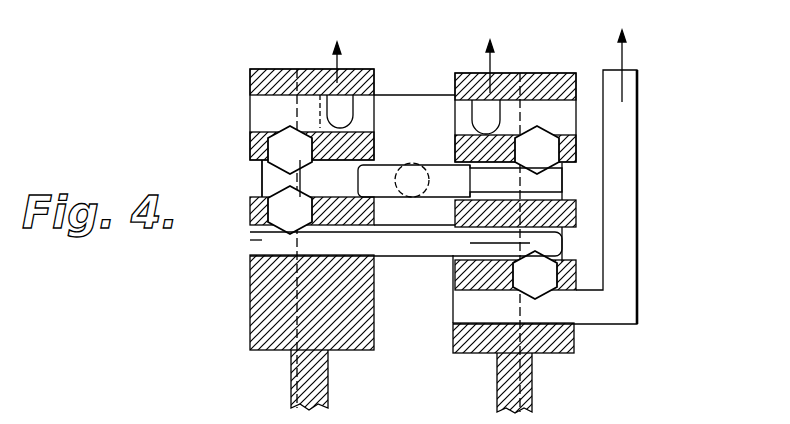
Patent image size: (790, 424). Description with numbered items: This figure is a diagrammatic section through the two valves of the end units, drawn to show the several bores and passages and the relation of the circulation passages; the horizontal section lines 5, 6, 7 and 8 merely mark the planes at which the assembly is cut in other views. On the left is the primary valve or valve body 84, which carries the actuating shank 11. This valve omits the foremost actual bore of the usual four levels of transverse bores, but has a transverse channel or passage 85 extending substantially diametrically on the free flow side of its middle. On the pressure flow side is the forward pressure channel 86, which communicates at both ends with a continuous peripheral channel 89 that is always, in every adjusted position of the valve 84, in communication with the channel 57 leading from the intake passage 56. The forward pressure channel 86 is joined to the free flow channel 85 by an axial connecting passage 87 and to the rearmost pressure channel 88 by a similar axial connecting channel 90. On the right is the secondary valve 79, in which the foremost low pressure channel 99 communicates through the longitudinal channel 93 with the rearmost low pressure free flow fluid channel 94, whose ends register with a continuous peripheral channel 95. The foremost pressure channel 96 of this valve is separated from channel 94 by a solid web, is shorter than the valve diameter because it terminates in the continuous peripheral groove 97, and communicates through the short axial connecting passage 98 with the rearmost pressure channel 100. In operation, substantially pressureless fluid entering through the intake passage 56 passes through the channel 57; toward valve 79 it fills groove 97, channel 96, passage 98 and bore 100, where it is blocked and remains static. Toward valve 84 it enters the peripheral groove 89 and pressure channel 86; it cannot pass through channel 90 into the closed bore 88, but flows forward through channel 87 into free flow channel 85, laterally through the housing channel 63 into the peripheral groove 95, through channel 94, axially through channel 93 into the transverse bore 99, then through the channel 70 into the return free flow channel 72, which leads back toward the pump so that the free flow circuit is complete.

The section line 5 is at (217, 285).
The section line 6 is at (218, 225).
The section line 7 is at (222, 158).
The section line 8 is at (229, 90).
The actuating shank 11 is at (306, 385).
The intake passage 56 is at (437, 162).
The channel 57 is at (437, 195).
The channel 63 is at (424, 250).
The channel 70 is at (618, 320).
The return free flow channel 72 is at (630, 198).
The secondary valve 79 is at (548, 344).
The primary valve 84 is at (274, 330).
The free flow channel 85 is at (250, 246).
The forward pressure channel 86 is at (392, 168).
The axial connecting passage 87 is at (290, 210).
The rearmost pressure channel 88 is at (365, 109).
The continuous peripheral channel 89 is at (261, 190).
The axial connecting channel 90 is at (290, 150).
The longitudinal channel 93 is at (535, 275).
The rearmost low pressure free flow fluid channel 94 is at (500, 247).
The continuous peripheral channel 95 is at (573, 233).
The foremost pressure channel 96 is at (578, 173).
The continuous peripheral groove 97 is at (572, 183).
The axial connecting passage 98 is at (537, 150).
The foremost low pressure channel 99 is at (452, 316).
The rearmost pressure channel 100 is at (546, 108).